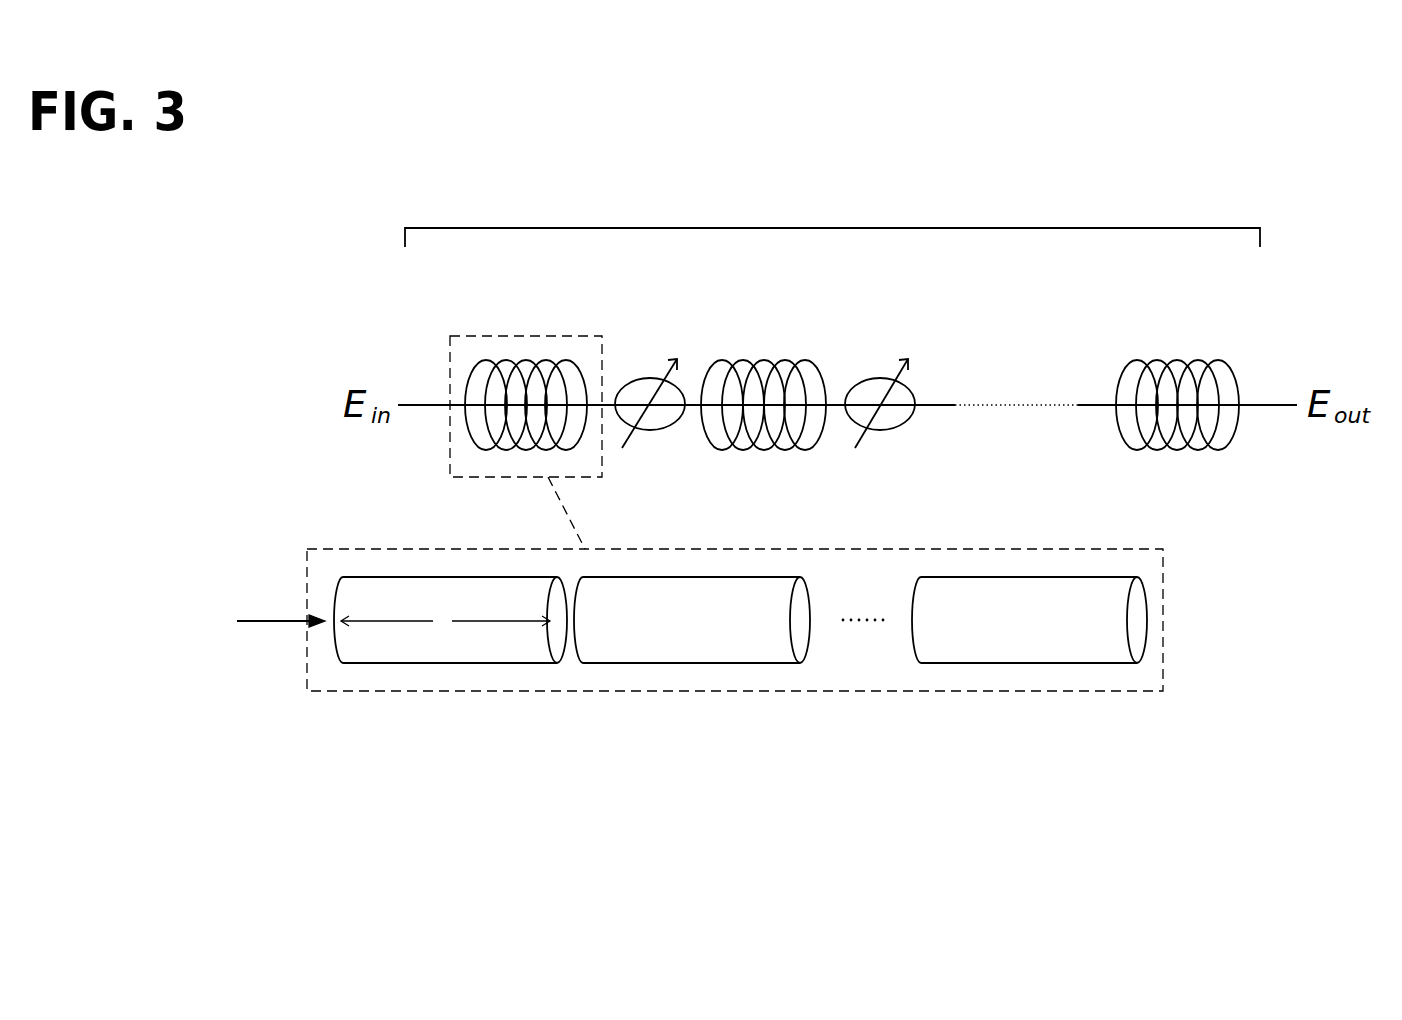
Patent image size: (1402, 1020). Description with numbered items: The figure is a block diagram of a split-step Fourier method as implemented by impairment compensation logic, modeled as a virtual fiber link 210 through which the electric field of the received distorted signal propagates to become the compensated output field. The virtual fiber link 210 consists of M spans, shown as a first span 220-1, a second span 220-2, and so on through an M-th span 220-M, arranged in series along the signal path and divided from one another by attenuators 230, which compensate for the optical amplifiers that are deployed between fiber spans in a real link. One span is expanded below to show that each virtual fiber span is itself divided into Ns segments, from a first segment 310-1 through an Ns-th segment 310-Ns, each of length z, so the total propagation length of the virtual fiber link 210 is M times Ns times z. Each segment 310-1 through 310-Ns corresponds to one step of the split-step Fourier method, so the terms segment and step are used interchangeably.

The virtual fiber link 210 is at (905, 228).
The first virtual fiber span 220-1 is at (540, 318).
The second virtual fiber span 220-2 is at (753, 318).
The M-th virtual fiber span 220-M is at (1163, 318).
The attenuator 230 is at (635, 461).
The first fiber segment 310-1 is at (397, 674).
The Ns-th fiber segment 310-Ns is at (962, 674).